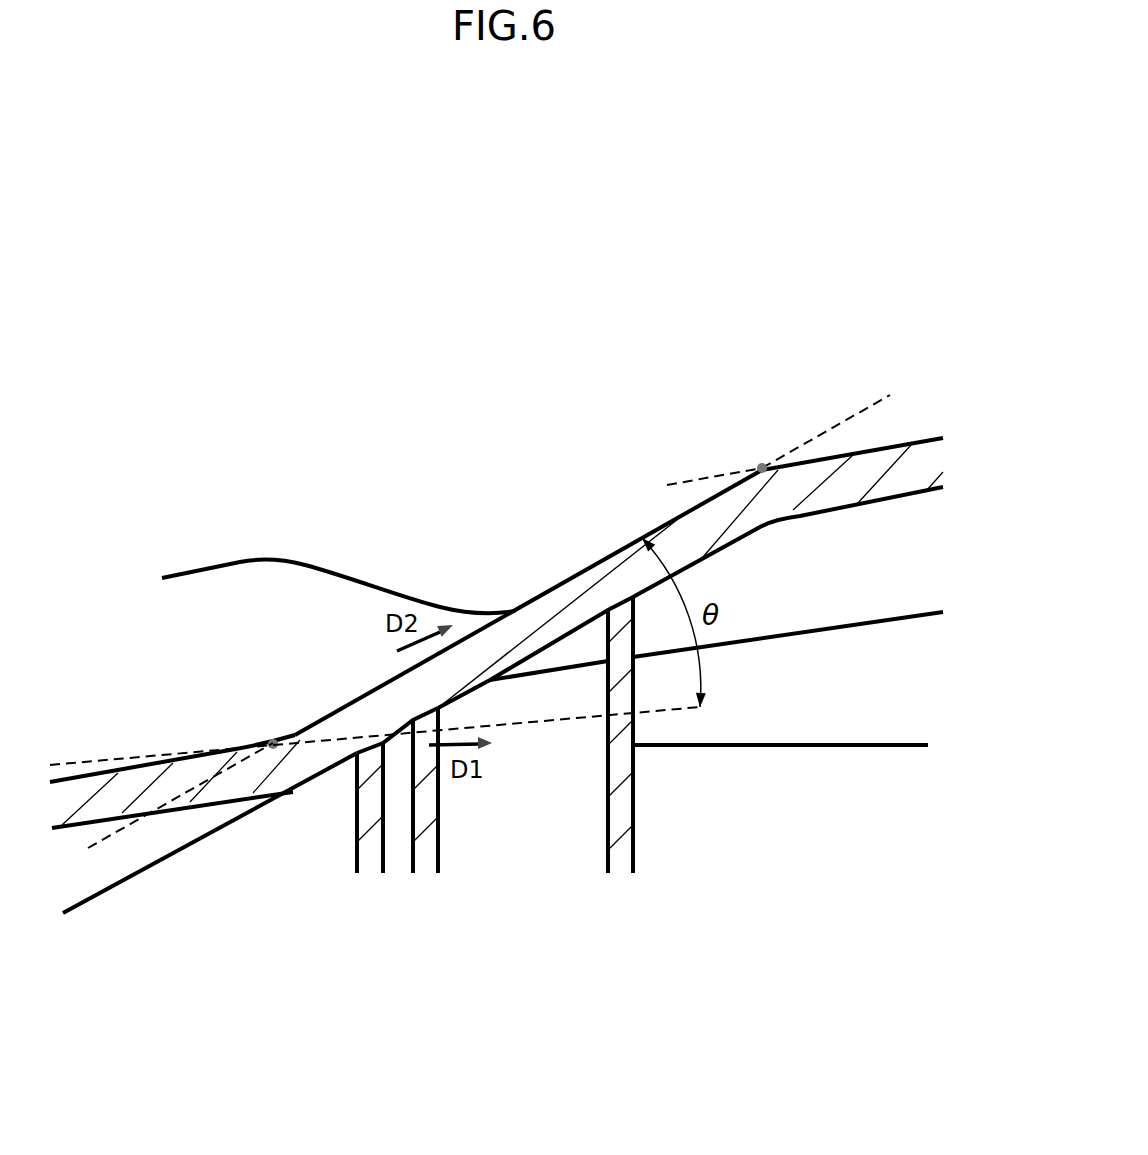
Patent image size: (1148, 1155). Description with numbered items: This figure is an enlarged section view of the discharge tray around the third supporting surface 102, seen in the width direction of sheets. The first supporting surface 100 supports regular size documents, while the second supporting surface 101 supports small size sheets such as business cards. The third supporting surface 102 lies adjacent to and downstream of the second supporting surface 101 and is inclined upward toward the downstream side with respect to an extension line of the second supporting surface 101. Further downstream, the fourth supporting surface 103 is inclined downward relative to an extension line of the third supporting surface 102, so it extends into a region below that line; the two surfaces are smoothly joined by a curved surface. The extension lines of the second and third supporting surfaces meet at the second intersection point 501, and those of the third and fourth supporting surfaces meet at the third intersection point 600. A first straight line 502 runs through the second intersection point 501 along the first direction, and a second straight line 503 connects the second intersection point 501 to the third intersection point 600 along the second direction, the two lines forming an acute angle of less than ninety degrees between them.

The first supporting surface 100 is at (194, 570).
The second supporting surface 101 is at (127, 767).
The third supporting surface 102 is at (520, 610).
The fourth supporting surface 103 is at (863, 450).
The second intersection point 501 is at (273, 747).
The first straight line 502 is at (528, 723).
The second straight line 503 is at (115, 835).
The third intersection point 600 is at (762, 468).